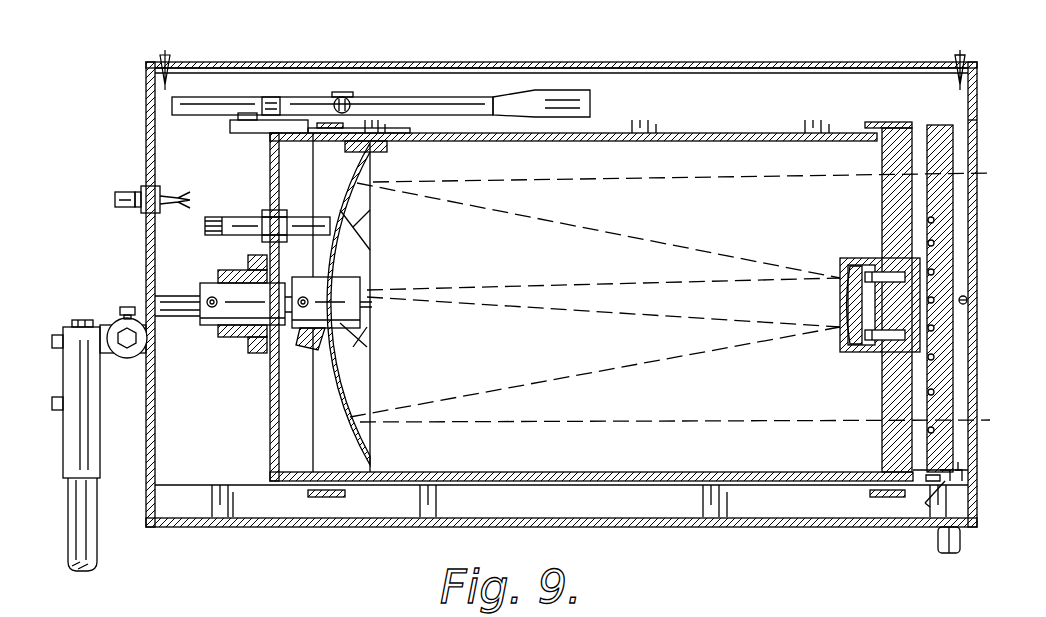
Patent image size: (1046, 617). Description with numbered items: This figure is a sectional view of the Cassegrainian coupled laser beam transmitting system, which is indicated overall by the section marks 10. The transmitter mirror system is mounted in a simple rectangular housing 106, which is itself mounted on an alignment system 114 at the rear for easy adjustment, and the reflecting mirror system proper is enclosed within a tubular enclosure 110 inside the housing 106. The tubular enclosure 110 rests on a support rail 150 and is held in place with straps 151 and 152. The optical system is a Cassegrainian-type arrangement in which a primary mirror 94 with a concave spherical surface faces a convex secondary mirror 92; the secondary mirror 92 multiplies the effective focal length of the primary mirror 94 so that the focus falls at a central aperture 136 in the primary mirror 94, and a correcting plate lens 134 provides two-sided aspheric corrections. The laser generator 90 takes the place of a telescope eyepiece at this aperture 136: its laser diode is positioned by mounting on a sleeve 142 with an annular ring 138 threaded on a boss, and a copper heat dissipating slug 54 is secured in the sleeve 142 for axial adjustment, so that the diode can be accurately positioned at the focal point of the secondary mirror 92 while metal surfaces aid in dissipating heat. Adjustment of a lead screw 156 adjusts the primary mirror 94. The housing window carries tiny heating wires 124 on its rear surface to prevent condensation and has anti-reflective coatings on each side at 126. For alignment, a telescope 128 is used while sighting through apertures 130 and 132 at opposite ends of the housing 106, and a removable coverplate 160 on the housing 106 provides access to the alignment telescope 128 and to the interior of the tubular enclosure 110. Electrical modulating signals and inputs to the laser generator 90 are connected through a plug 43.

The section line indication 10 is at (178, 315).
The plug 43 is at (130, 192).
The copper slug 54 is at (165, 298).
The laser generator 90 is at (316, 350).
The convex secondary mirror 92 is at (840, 300).
The primary mirror 94 is at (343, 224).
The housing 106 is at (437, 527).
The tubular enclosure 110 is at (655, 478).
The alignment system 114 is at (104, 527).
The heating wires 124 is at (890, 178).
The anti-reflective coatings 126 is at (935, 385).
The alignment telescope 128 is at (380, 104).
The aperture 130 is at (146, 100).
The aperture 132 is at (977, 90).
The lens 134 is at (890, 210).
The central aperture 136 is at (340, 277).
The annular ring 138 is at (255, 353).
The sleeve 142 is at (240, 272).
The support rail 150 is at (278, 515).
The strap 151 is at (328, 123).
The strap 152 is at (887, 125).
The lead screw 156 is at (258, 226).
The removable coverplate 160 is at (712, 62).